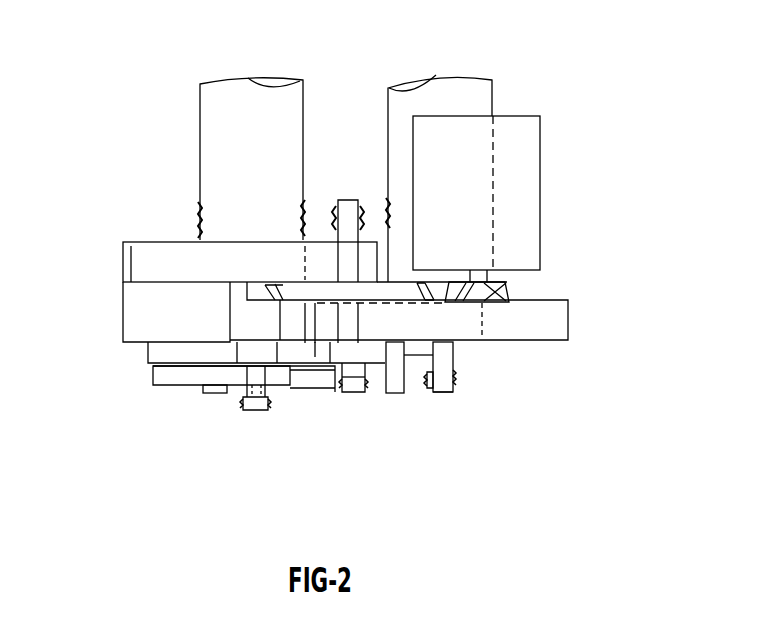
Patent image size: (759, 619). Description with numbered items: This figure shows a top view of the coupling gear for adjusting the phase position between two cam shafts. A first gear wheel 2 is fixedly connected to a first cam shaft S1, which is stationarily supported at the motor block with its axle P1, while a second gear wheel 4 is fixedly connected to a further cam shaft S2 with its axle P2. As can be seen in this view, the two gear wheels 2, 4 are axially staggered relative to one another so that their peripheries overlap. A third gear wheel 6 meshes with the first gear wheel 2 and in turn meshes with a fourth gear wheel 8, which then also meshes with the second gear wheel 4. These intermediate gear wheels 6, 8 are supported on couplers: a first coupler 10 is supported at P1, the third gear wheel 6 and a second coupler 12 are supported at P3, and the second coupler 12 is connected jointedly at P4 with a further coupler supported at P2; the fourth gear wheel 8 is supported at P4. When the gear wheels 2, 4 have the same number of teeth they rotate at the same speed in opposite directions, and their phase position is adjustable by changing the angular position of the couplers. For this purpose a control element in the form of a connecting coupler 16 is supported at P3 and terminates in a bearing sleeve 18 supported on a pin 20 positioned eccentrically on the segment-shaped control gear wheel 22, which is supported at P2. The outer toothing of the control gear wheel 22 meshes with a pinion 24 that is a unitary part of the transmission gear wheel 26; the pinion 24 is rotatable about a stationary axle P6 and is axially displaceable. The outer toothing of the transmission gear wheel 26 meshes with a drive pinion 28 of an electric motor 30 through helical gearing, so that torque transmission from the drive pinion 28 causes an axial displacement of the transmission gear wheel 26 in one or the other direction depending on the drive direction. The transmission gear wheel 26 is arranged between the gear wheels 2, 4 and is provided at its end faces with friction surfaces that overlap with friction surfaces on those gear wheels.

The first gear wheel 2 is at (555, 315).
The second gear wheel 4 is at (315, 260).
The third gear wheel 6 is at (457, 327).
The fourth gear wheel 8 is at (142, 302).
The first coupler 10 is at (413, 355).
The second coupler 12 is at (307, 388).
The connecting coupler 16 is at (303, 380).
The bearing sleeve 18 is at (153, 373).
The pin 20 is at (175, 375).
The control gear wheel 22 is at (163, 357).
The pinion 24 is at (364, 353).
The transmission gear wheel 26 is at (374, 290).
The drive pinion 28 is at (507, 303).
The electric motor 30 is at (525, 163).
The first cam shaft S1 is at (445, 88).
The further cam shaft S2 is at (220, 112).
The axle P1 is at (445, 392).
The axle P2 is at (253, 410).
The support point P3 is at (373, 357).
The joint P4 is at (225, 377).
The stationary axle P6 is at (345, 390).